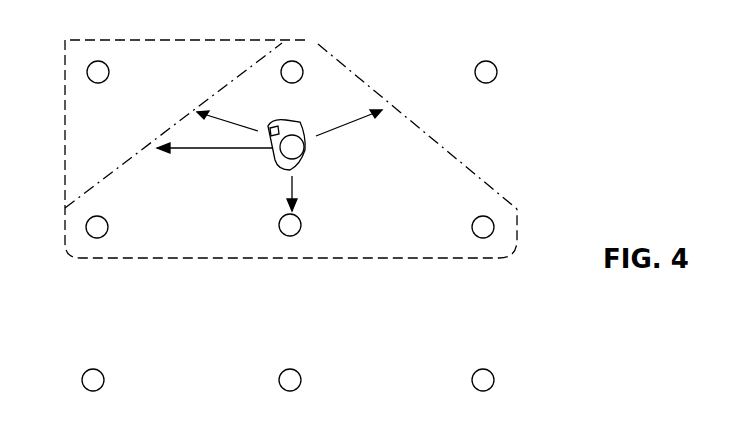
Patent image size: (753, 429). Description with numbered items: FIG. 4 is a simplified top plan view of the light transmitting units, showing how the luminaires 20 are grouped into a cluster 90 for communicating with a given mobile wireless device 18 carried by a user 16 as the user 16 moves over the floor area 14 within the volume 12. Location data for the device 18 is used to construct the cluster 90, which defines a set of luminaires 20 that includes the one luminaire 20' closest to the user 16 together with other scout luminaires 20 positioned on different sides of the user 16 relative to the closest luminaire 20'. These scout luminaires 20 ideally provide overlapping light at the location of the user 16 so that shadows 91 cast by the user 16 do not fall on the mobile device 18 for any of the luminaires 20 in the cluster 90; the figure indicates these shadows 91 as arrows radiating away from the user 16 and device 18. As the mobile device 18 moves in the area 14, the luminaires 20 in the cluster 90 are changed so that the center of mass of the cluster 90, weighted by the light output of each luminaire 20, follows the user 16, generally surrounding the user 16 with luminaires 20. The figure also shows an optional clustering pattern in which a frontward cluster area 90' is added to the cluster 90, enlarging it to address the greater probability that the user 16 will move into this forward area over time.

The volume 12 is at (208, 317).
The floor area 14 is at (413, 317).
The user 16 is at (302, 158).
The wireless device 18 is at (278, 157).
The luminaire 20 is at (307, 204).
The closest luminaire 20' is at (314, 50).
The cluster 90 is at (291, 126).
The frontward cluster area 90' is at (273, 146).
The shadow 91 is at (238, 124).